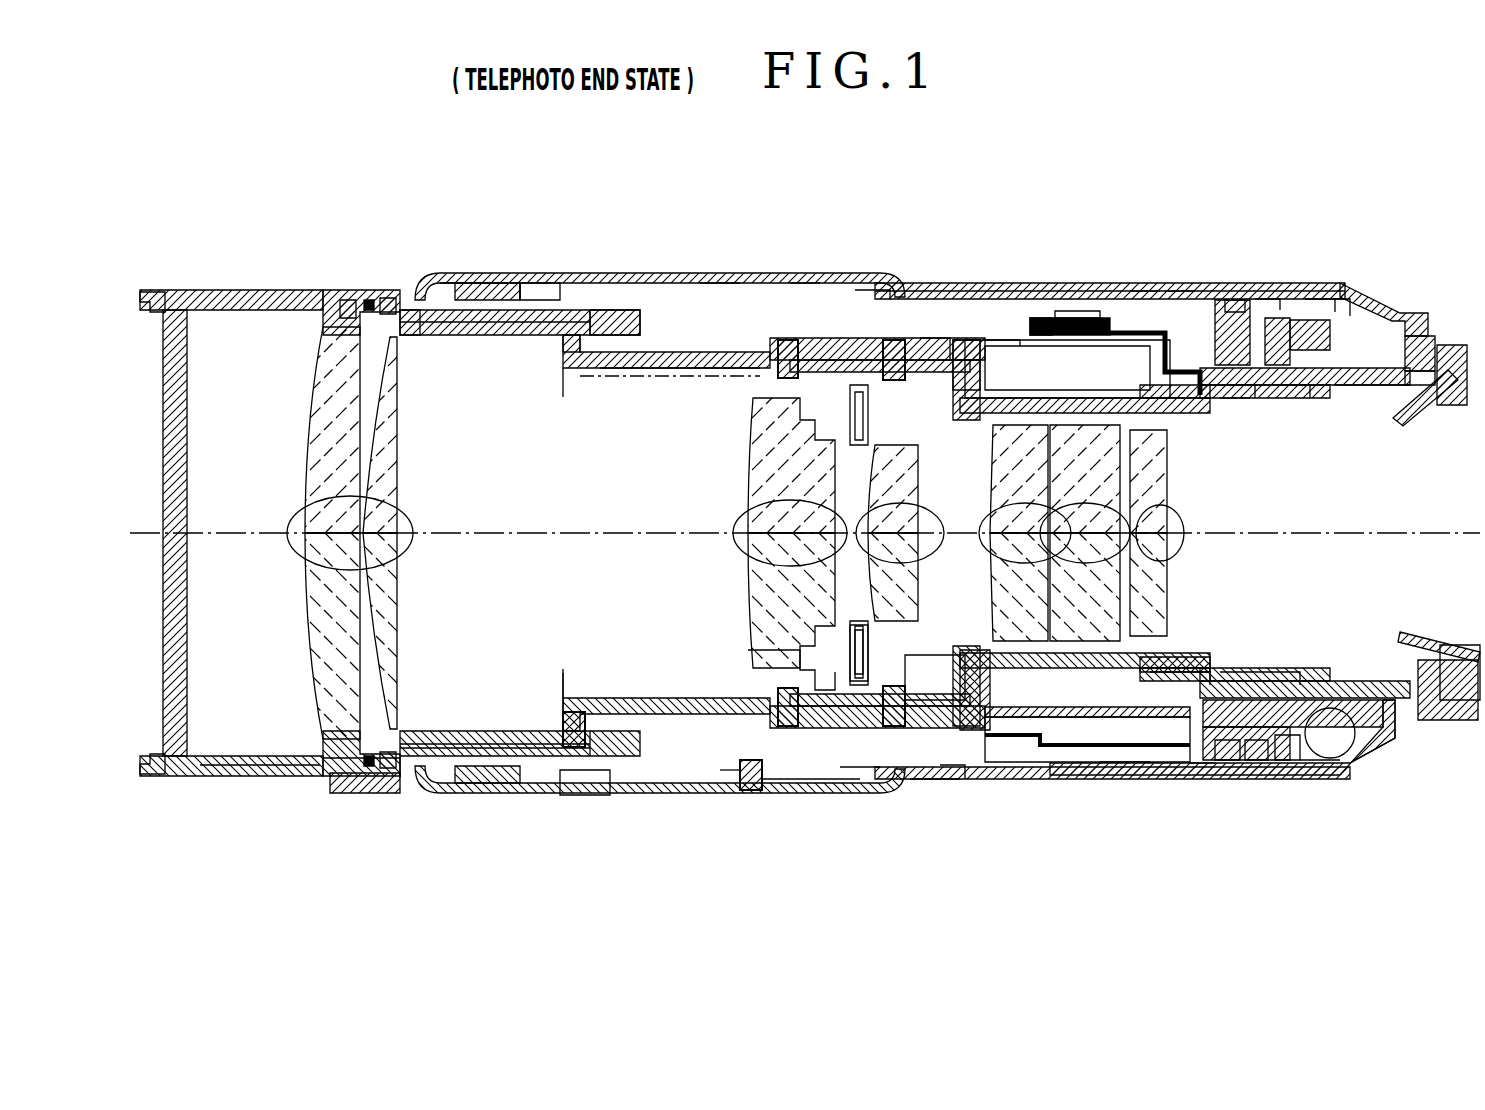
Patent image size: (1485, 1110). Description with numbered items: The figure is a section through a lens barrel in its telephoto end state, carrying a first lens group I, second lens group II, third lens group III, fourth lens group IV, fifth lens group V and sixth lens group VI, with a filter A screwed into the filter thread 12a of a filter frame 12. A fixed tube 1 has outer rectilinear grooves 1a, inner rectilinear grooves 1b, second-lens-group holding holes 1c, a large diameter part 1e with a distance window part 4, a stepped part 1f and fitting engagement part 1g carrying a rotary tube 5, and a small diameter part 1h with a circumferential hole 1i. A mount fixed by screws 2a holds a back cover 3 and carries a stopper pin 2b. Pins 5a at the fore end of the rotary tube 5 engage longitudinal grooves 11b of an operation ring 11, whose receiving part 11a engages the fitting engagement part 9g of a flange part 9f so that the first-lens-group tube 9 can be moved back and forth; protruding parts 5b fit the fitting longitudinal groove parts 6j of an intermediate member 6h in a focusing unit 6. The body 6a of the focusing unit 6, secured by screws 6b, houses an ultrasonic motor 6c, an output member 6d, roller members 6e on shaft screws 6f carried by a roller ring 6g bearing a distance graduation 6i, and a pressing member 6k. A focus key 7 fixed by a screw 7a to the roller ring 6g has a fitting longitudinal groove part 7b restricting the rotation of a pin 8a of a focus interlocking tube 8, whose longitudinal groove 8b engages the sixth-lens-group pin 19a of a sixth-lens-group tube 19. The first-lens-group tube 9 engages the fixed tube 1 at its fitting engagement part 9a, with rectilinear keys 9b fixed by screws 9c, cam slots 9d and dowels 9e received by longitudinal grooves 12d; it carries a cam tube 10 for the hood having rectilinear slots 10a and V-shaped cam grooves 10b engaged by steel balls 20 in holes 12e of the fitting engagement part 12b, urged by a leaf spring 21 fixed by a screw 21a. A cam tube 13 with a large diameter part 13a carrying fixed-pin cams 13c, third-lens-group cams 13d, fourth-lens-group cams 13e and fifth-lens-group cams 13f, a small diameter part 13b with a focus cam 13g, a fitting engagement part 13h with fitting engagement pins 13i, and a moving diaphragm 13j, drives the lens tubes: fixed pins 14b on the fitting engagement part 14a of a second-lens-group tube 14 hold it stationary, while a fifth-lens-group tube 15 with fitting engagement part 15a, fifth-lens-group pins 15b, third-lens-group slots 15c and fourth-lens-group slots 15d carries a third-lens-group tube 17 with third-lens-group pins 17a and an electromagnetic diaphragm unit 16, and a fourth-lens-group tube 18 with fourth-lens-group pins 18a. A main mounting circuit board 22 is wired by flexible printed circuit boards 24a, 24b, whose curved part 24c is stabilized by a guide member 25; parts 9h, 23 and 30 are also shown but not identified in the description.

The filter A is at (130, 290).
The fixed tube 1 is at (1385, 300).
The outer rectilinear grooves 1a is at (1060, 762).
The inner rectilinear grooves 1b is at (1100, 300).
The second-lens-group holding holes 1c is at (785, 340).
The large diameter part 1e is at (1145, 300).
The stepped part 1f is at (1268, 300).
The fitting engagement part 1g is at (1180, 300).
The small diameter part 1h is at (1385, 385).
The circumferential hole 1i is at (1235, 400).
The screws 2a is at (1445, 345).
The stopper pin 2b is at (1420, 410).
The back cover 3 is at (1455, 426).
The distance window part 4 is at (1310, 320).
The rotary tube 5 is at (1085, 325).
The pins 5a is at (870, 300).
The protruding parts 5b is at (1235, 300).
The focusing unit 6 is at (1170, 762).
The body 6a is at (1300, 700).
The screws 6b is at (1430, 720).
The ultrasonic motor 6c is at (1355, 762).
The output member 6d is at (1345, 300).
The roller members 6e is at (1290, 762).
The shaft screws 6f is at (1320, 760).
The roller ring 6g is at (1200, 762).
The intermediate member 6h is at (1225, 760).
The distance graduation 6i is at (1320, 300).
The fitting longitudinal groove parts 6j is at (1255, 760).
The pressing member 6k is at (1390, 740).
The focus key 7 is at (1285, 390).
The screw 7a is at (1350, 390).
The fitting longitudinal groove part 7b is at (1240, 398).
The focus interlocking tube 8 is at (1330, 400).
The pin 8a is at (1215, 300).
The longitudinal groove 8b is at (1280, 665).
The first-lens-group tube 9 is at (440, 300).
The fitting engagement part 9a is at (700, 376).
The rectilinear keys 9b is at (820, 790).
The screws 9c is at (745, 790).
The cam slots 9d is at (582, 795).
The dowels 9e is at (360, 793).
The flange part 9f is at (540, 283).
The fitting engagement part 9g is at (480, 290).
The barrel portion 9h is at (700, 790).
The cam tube for hood 10 is at (460, 308).
The rectilinear slots 10a is at (465, 790).
The V-shaped cam grooves 10b is at (415, 305).
The operation ring 11 is at (672, 273).
The fitting engagement receiving part 11a is at (505, 290).
The longitudinal grooves 11b is at (715, 280).
The filter frame 12 is at (270, 290).
The filter thread 12a is at (195, 290).
The fitting engagement part 12b is at (400, 795).
The longitudinal grooves 12d is at (262, 765).
The holes 12e is at (400, 300).
The cam tube 13 is at (590, 368).
The large diameter part 13a is at (660, 368).
The small diameter part 13b is at (1090, 385).
The fixed-pin cams 13c is at (805, 290).
The third-lens-group cams 13d is at (900, 340).
The fourth-lens-group cams 13e is at (935, 790).
The fifth-lens-group cams 13f is at (1000, 340).
The focus cam 13g is at (1190, 650).
The fitting engagement part 13h is at (580, 300).
The fitting engagement pins 13i is at (570, 735).
The moving diaphragm 13j is at (570, 700).
The second-lens-group tube 14 is at (760, 662).
The fitting engagement part 14a is at (770, 790).
The fixed pins 14b is at (757, 275).
The fifth-lens-group tube 15 is at (970, 430).
The fitting engagement part 15a is at (960, 340).
The fifth-lens-group pins 15b is at (975, 340).
The third-lens-group slots 15c is at (918, 392).
The fourth-lens-group slots 15d is at (860, 795).
The electromagnetic diaphragm unit 16 is at (855, 620).
The third-lens-group tube 17 is at (830, 340).
The third-lens-group pins 17a is at (935, 340).
The fourth-lens-group tube 18 is at (985, 650).
The fourth-lens-group pins 18a is at (950, 780).
The sixth-lens-group tube 19 is at (1160, 585).
The sixth-lens-group pin 19a is at (1120, 762).
The steel balls 20 is at (385, 305).
The leaf spring 21 is at (375, 300).
The screw 21a is at (345, 303).
The main mounting circuit board 22 is at (1160, 330).
The drive gear 23 is at (1040, 320).
The flexible printed circuit board 24a is at (1295, 398).
The flexible printed circuit board 24b is at (1240, 660).
The curved part 24c is at (1010, 760).
The guide member 25 is at (935, 655).
The motor 30 is at (1068, 318).
The first lens group I is at (415, 510).
The second lens group II is at (740, 520).
The third lens group III is at (855, 500).
The fourth lens group IV is at (990, 515).
The fifth lens group V is at (1168, 465).
The sixth lens group VI is at (1172, 500).